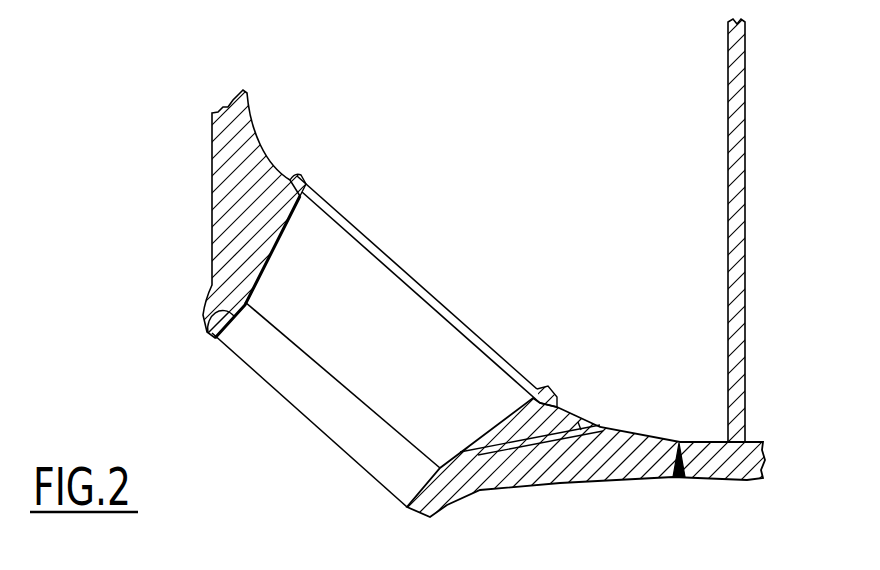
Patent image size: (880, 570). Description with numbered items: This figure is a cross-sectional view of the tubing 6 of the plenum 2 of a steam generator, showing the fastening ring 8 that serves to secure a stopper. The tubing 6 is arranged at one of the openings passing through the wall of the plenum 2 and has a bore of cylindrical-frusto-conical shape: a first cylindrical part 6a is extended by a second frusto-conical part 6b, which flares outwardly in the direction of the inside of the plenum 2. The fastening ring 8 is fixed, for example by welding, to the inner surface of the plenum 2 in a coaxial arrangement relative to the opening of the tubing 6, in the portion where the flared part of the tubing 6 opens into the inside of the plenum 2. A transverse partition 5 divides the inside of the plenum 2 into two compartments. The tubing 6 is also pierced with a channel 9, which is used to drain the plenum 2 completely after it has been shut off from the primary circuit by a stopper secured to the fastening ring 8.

The plenum 2 is at (396, 341).
The transverse partition 5 is at (737, 312).
The tubing 6 is at (514, 490).
The first cylindrical part 6a is at (205, 318).
The second frusto-conical part 6b is at (262, 237).
The fastening ring 8 is at (556, 391).
The channel 9 is at (580, 424).